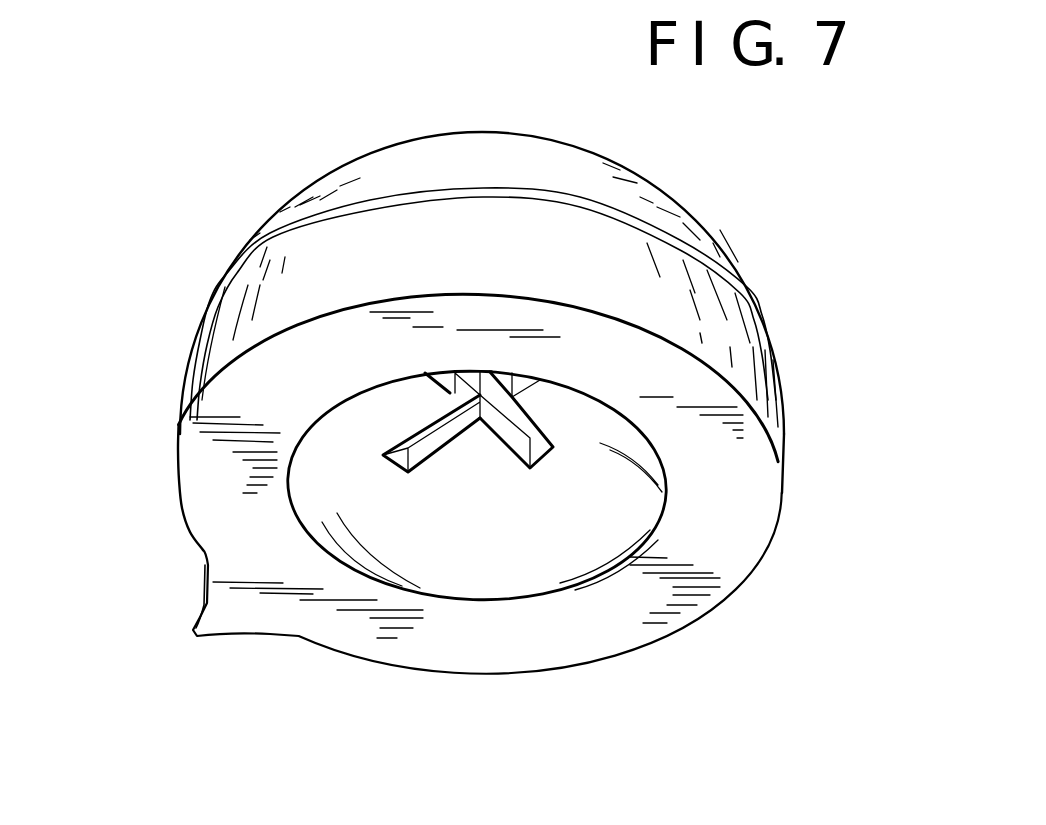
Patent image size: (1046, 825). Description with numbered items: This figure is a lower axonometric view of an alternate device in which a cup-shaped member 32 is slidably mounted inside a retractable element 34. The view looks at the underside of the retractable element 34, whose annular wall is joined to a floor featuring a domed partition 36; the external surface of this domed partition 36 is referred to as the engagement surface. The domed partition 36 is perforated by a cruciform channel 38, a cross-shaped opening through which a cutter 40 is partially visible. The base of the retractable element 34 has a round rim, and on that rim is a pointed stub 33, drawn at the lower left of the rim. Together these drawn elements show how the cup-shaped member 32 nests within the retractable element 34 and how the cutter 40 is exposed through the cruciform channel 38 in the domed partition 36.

The cup-shaped member 32 is at (502, 163).
The pointed stub 33 is at (194, 620).
The retractable element 34 is at (733, 343).
The domed partition 36 is at (437, 580).
The cruciform channel 38 is at (525, 450).
The cutter 40 is at (503, 416).